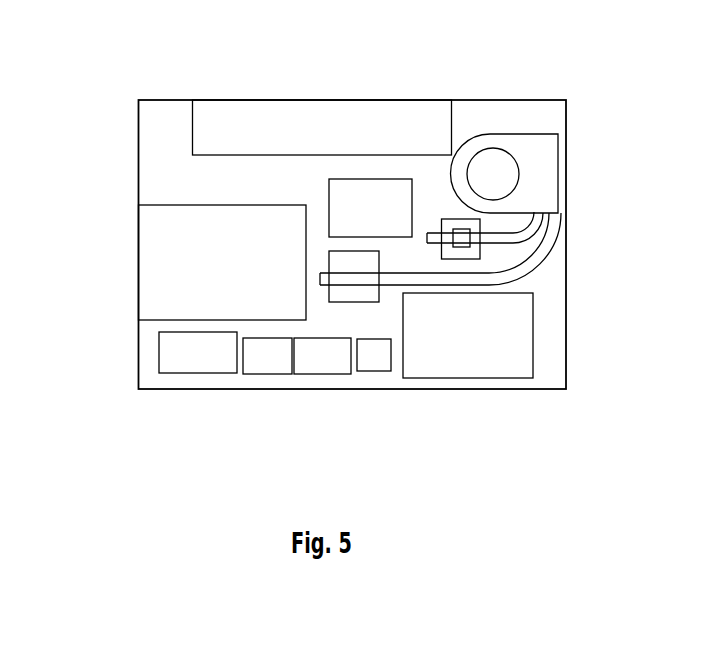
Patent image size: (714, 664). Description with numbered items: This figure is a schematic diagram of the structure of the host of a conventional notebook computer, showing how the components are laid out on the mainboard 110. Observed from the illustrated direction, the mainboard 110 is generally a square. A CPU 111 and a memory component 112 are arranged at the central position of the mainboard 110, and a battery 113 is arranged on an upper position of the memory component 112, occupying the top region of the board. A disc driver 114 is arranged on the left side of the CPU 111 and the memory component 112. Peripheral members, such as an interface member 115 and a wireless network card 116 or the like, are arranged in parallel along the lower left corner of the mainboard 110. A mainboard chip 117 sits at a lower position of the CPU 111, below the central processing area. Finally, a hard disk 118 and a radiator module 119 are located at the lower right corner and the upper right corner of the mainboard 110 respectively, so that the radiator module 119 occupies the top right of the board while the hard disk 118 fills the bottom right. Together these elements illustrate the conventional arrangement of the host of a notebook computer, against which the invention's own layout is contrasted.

The mainboard 110 is at (478, 108).
The CPU 111 is at (365, 292).
The memory component 112 is at (372, 203).
The battery 113 is at (245, 115).
The disc driver 114 is at (210, 237).
The interface member 115 is at (175, 351).
The wireless network card 116 is at (270, 355).
The mainboard chip 117 is at (367, 358).
The hard disk 118 is at (473, 343).
The radiator module 119 is at (537, 160).